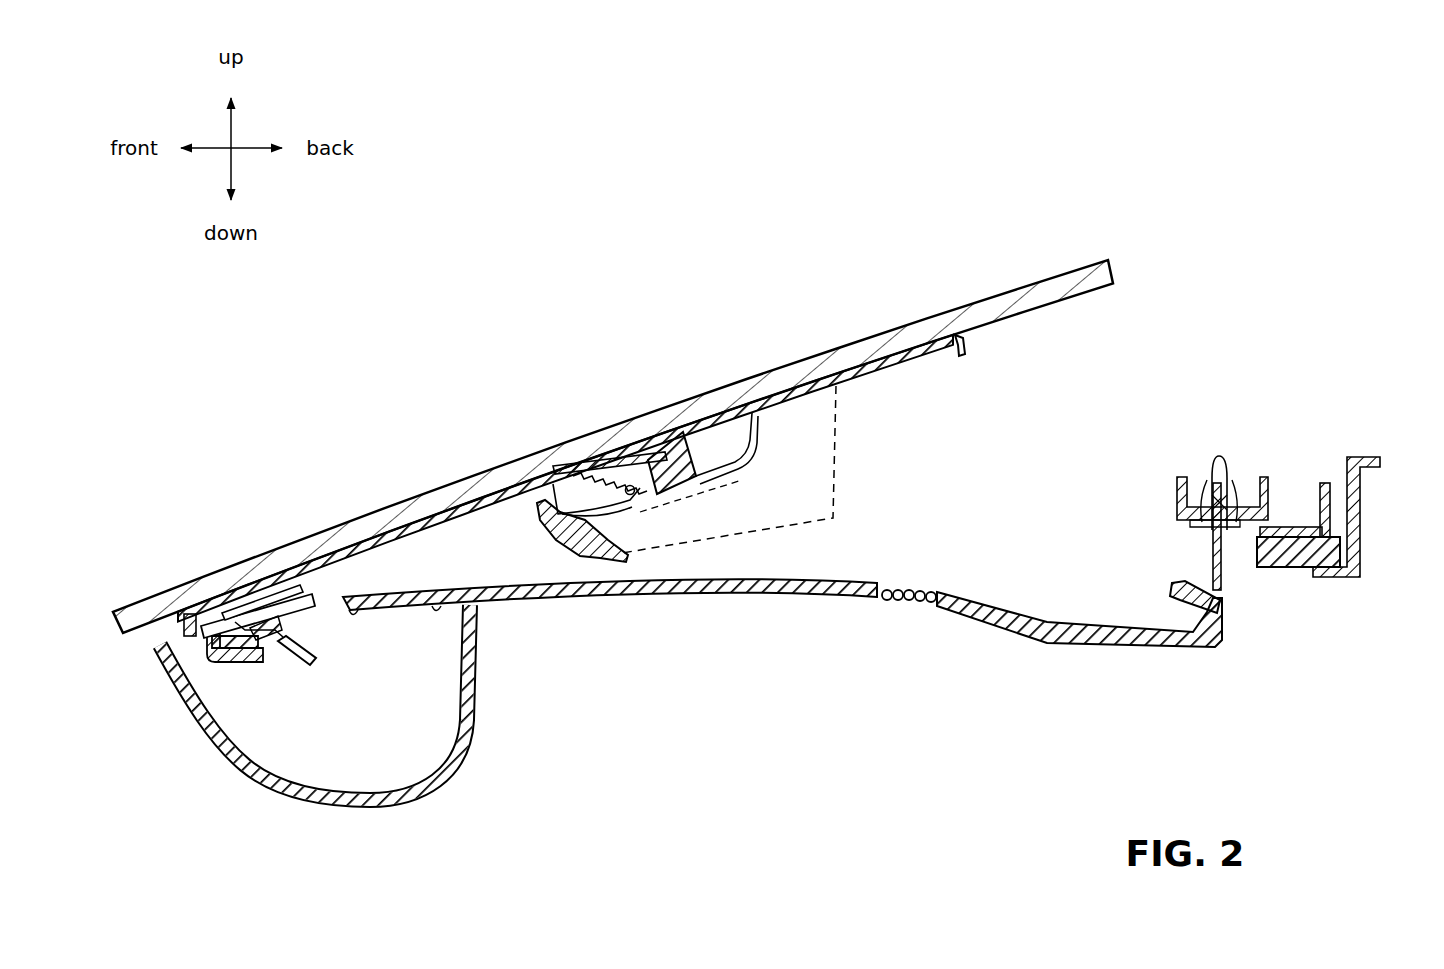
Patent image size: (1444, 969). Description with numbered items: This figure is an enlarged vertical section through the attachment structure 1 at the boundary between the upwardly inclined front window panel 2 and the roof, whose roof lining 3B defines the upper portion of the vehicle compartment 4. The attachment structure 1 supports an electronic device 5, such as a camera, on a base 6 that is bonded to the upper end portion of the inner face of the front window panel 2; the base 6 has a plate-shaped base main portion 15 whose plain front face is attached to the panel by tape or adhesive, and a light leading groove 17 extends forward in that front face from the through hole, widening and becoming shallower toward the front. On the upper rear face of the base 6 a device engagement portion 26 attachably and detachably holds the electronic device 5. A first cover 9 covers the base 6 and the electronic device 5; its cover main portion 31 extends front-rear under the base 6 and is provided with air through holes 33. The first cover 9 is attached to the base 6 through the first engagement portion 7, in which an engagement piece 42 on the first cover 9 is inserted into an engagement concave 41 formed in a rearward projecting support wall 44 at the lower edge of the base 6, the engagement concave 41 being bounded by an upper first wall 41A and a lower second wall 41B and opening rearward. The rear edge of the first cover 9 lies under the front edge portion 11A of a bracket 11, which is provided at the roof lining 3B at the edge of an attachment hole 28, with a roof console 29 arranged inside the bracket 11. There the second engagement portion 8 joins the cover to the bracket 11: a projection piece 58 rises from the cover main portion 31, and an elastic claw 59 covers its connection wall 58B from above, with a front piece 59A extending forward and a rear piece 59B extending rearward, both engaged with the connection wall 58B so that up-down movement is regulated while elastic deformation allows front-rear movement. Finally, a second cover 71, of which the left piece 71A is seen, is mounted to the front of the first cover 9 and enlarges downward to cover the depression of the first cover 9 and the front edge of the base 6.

The attachment structure 1 is at (755, 694).
The front window panel 2 is at (868, 342).
The roof lining 3B is at (1292, 562).
The vehicle compartment 4 is at (950, 752).
The electronic device 5 is at (783, 530).
The base 6 is at (862, 372).
The first engagement portion 7 is at (296, 670).
The second engagement portion 8 is at (1160, 488).
The first cover 9 is at (709, 596).
The bracket 11 is at (1325, 479).
The front edge portion 11A is at (1300, 526).
The base main portion 15 is at (730, 402).
The light leading groove 17 is at (590, 466).
The device engagement portion 26 is at (610, 521).
The attachment hole 28 is at (1343, 546).
The roof console 29 is at (1340, 578).
The cover main portion 31 is at (660, 596).
The air through hole 33 is at (886, 604).
The engagement concave 41 is at (231, 672).
The first wall 41A is at (243, 595).
The second wall 41B is at (266, 658).
The engagement piece 42 is at (313, 634).
The support wall 44 is at (297, 636).
The projection piece 58 is at (1208, 565).
The connection wall 58B is at (1210, 542).
The elastic claw 59 is at (1219, 456).
The front piece 59A is at (1203, 492).
The rear piece 59B is at (1234, 492).
The second cover 71 is at (377, 810).
The left piece 71A is at (318, 800).